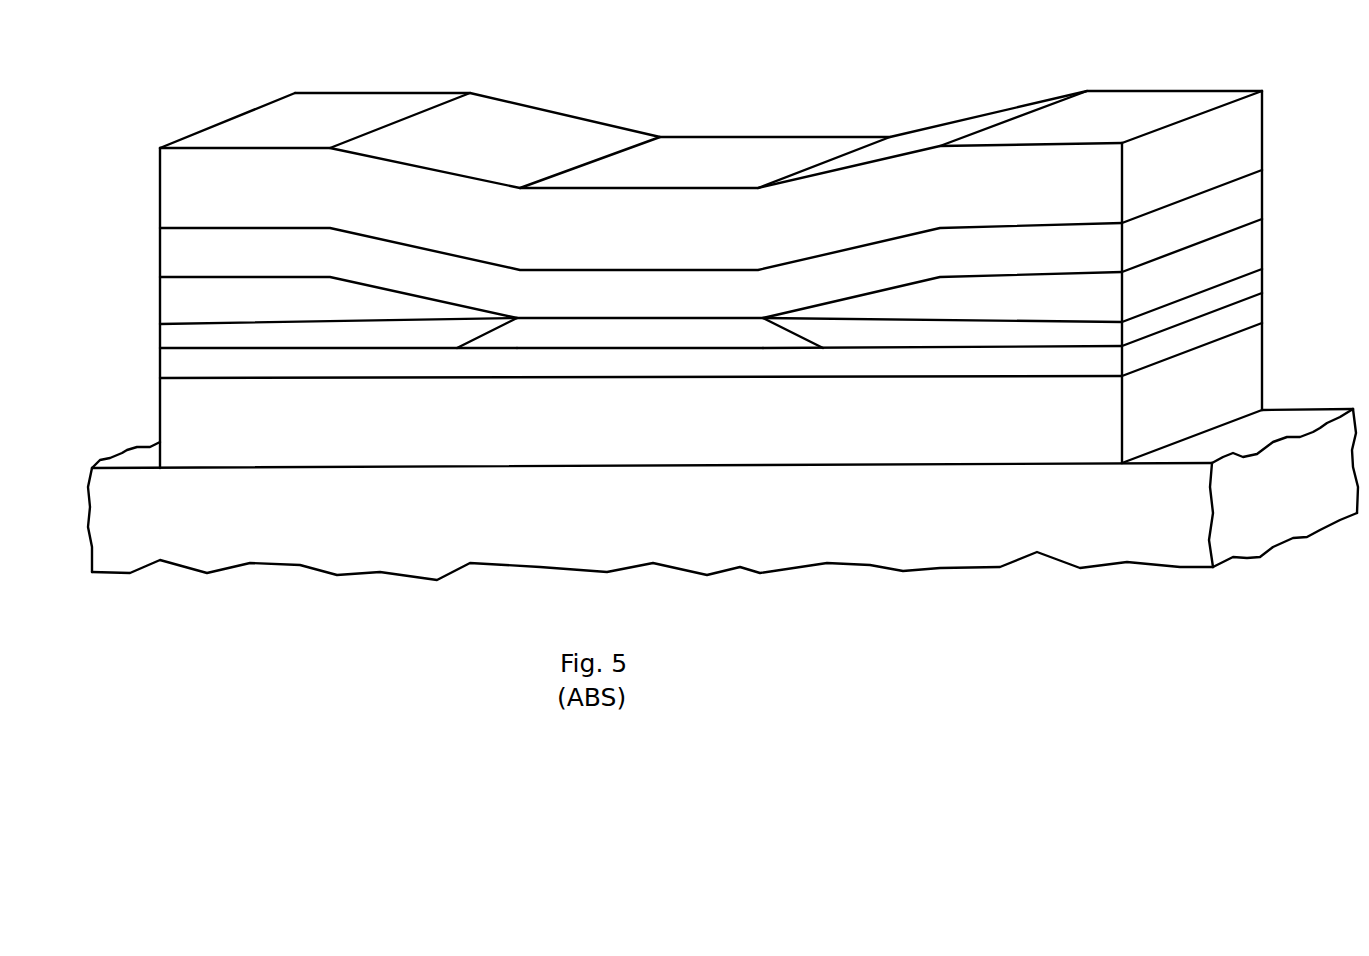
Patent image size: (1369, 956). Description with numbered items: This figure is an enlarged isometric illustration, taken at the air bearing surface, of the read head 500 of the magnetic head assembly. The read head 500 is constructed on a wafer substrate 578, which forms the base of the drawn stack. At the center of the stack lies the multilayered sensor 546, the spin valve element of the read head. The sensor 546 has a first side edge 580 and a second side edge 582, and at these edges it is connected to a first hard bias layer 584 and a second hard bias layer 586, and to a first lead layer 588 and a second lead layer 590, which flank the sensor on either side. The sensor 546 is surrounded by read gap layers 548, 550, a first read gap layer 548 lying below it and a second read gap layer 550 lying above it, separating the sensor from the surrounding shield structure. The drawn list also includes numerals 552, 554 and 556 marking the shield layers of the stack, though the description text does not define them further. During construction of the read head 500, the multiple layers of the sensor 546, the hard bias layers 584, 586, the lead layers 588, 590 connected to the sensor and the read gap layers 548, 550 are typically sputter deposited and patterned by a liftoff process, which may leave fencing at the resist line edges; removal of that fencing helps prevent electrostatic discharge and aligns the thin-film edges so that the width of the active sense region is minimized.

The read head 500 is at (778, 110).
The multilayered sensor 546 is at (558, 316).
The first read gap layer 548 is at (497, 368).
The second read gap layer 550 is at (392, 257).
The first shield layer (S1) 552 is at (323, 450).
The second shield layer (S2) 554 is at (711, 167).
The first pole piece layer (P1) 556 is at (237, 172).
The wafer substrate 578 is at (588, 531).
The first side edge 580 is at (473, 332).
The second side edge 582 is at (807, 332).
The first hard bias layer 584 is at (207, 340).
The second hard bias layer 586 is at (1073, 337).
The first lead layer 588 is at (200, 298).
The second lead layer 590 is at (1072, 303).